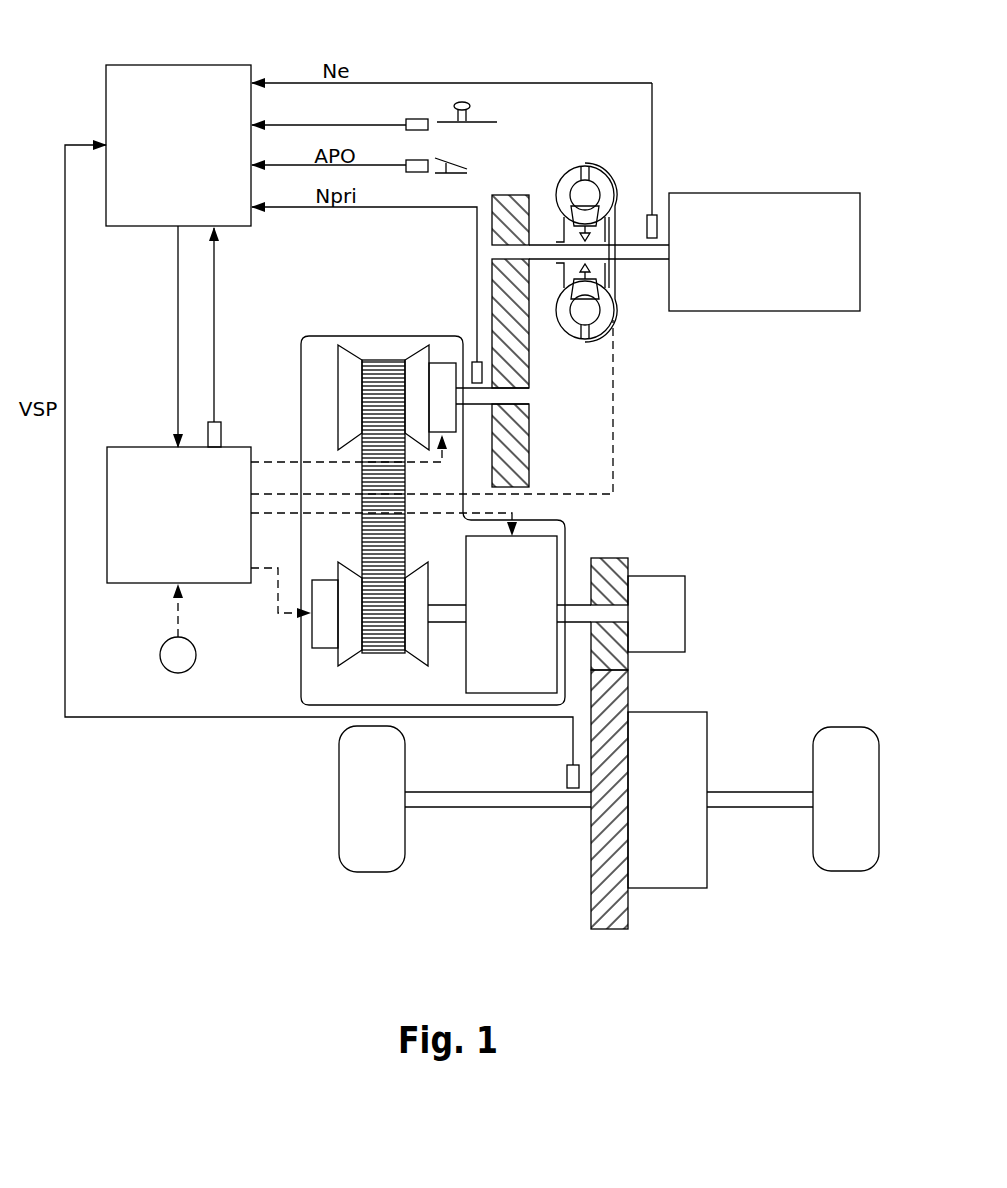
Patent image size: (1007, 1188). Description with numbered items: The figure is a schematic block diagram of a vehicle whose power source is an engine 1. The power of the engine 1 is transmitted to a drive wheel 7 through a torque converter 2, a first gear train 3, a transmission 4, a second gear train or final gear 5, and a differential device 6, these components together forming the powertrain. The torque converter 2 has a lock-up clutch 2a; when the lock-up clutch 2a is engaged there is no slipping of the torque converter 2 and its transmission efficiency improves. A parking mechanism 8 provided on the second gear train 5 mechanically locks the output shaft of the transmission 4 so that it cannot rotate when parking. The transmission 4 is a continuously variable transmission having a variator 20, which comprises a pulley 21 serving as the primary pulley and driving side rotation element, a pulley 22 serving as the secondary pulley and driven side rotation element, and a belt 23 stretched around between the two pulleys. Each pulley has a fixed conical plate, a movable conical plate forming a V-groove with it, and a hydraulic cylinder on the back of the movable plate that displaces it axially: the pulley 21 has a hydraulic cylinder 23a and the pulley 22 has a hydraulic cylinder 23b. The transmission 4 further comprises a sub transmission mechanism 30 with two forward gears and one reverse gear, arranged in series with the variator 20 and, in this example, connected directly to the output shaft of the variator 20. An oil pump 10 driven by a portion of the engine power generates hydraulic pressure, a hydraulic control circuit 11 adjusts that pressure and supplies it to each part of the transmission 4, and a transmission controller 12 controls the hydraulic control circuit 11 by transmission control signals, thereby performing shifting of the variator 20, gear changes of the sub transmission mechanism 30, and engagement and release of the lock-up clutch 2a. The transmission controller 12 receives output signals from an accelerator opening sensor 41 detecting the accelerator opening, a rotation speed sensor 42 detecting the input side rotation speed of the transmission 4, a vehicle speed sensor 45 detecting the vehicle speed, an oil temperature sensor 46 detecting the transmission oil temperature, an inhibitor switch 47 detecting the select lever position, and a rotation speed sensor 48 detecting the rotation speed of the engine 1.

The engine 1 is at (842, 192).
The torque converter 2 is at (612, 175).
The lock-up clutch 2a is at (610, 273).
The first gear train 3 is at (510, 192).
The transmission 4 is at (330, 335).
The second gear train (final gear) 5 is at (588, 912).
The differential device 6 is at (703, 722).
The drive wheel 7 is at (372, 873).
The parking mechanism 8 is at (675, 612).
The oil pump 10 is at (160, 655).
The hydraulic control circuit 11 is at (130, 446).
The transmission controller 12 is at (226, 64).
The variator 20 is at (372, 490).
The pulley (primary pulley) 21 is at (338, 400).
The pulley (secondary pulley) 22 is at (345, 639).
The belt 23 is at (378, 358).
The hydraulic cylinder 23a is at (440, 368).
The hydraulic cylinder 23b is at (315, 631).
The sub transmission mechanism 30 is at (553, 560).
The accelerator opening sensor 41 is at (416, 172).
The rotation speed sensor 42 is at (475, 360).
The vehicle speed sensor 45 is at (567, 775).
The oil temperature sensor 46 is at (216, 421).
The inhibitor switch 47 is at (406, 118).
The rotation speed sensor 48 is at (657, 224).